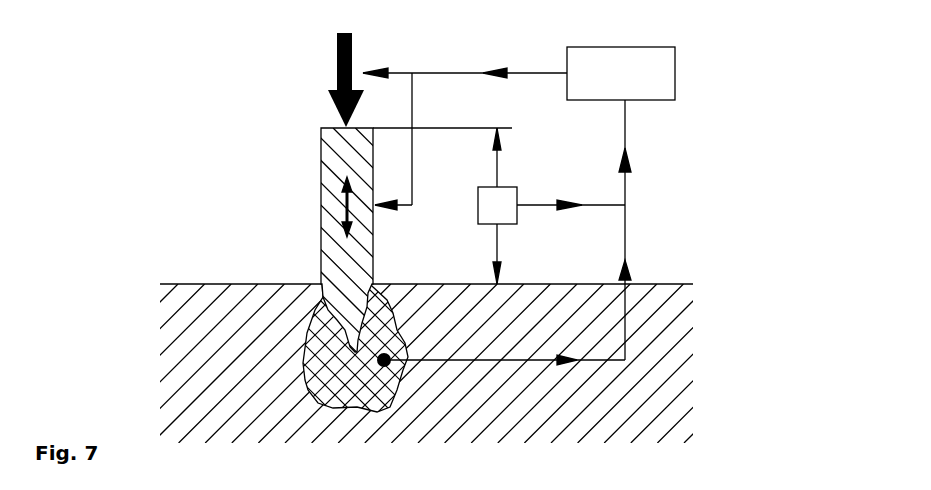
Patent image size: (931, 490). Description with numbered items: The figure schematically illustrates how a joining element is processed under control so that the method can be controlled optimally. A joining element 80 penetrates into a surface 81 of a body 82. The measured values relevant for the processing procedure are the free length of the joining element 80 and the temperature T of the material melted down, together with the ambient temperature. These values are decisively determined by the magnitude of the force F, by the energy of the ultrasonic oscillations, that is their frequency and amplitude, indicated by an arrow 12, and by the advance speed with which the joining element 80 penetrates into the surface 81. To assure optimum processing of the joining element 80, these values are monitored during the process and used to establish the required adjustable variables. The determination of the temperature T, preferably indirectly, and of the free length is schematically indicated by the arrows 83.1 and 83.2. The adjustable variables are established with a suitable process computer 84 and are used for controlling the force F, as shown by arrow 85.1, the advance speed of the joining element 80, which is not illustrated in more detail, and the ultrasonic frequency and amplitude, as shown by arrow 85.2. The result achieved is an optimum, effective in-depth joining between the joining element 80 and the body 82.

The arrow indicating ultrasonic oscillations 12 is at (337, 198).
The joining element 80 is at (337, 142).
The surface 81 is at (185, 275).
The body 82 is at (180, 317).
The arrow indicating temperature determination 83.1 is at (503, 362).
The arrow indicating free length determination 83.2 is at (499, 206).
The process computer 84 is at (637, 91).
The arrow indicating force control 85.1 is at (397, 66).
The arrow indicating ultrasonic frequency and amplitude control 85.2 is at (418, 182).
The force F is at (346, 67).
The temperature T is at (405, 363).